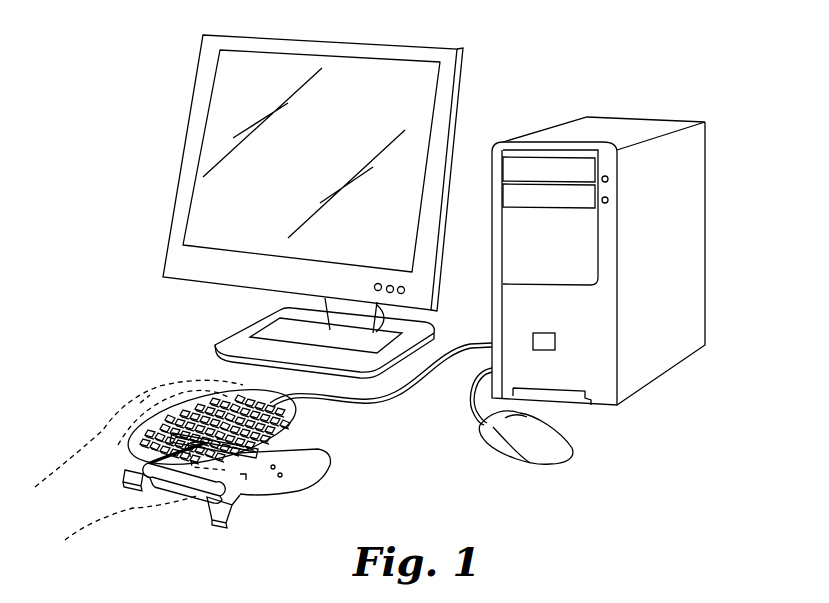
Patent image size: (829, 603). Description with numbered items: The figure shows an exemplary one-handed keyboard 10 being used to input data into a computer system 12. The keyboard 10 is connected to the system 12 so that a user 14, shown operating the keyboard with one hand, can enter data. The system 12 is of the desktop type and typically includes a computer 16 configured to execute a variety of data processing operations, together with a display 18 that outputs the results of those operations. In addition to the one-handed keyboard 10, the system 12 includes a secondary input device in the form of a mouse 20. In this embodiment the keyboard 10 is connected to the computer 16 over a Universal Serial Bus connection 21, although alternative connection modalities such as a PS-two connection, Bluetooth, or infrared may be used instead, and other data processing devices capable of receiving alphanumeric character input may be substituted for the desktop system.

The system 12 is at (600, 67).
The display 18 is at (193, 145).
The computer 16 is at (697, 240).
The Universal Serial Bus (USB) connection 21 is at (397, 397).
The mouse 20 is at (503, 447).
The one-handed keyboard 10 is at (318, 460).
The user 14 is at (103, 520).